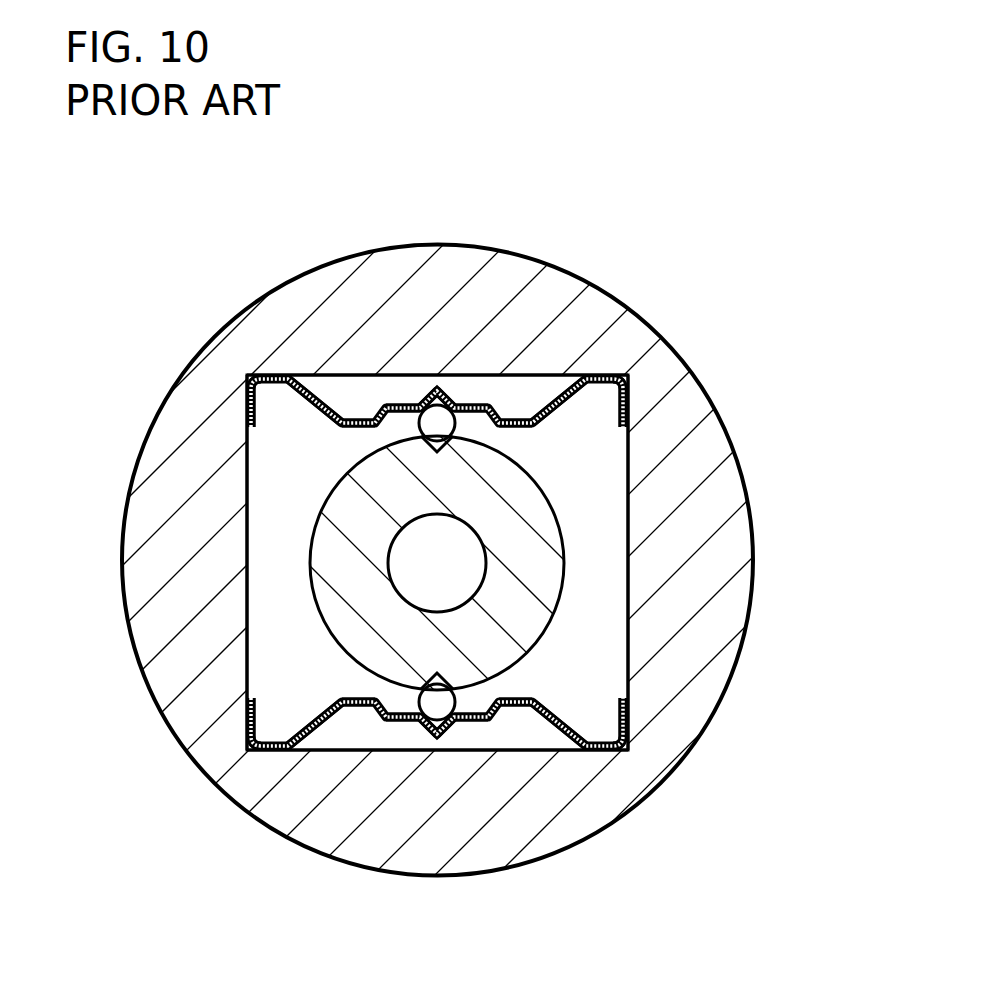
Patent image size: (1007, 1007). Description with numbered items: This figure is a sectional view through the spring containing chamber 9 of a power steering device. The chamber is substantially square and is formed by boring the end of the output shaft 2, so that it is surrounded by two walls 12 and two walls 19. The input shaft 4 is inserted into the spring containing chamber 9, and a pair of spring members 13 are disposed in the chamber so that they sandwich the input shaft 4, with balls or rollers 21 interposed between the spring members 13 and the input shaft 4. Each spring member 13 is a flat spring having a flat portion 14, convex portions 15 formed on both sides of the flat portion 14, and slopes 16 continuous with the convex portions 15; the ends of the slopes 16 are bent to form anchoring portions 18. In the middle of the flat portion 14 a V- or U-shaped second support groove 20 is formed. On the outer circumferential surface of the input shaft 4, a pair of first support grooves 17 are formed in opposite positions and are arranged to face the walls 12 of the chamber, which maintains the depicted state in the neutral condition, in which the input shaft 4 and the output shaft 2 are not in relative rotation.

The output shaft 2 is at (700, 403).
The input shaft 4 is at (318, 556).
The spring containing chamber 9 is at (598, 523).
The wall 12 is at (550, 373).
The spring member 13 is at (300, 182).
The flat portion 14 is at (403, 405).
The convex portion 15 is at (360, 418).
The slope 16 is at (335, 415).
The first support groove 17 is at (455, 438).
The anchoring portion 18 is at (245, 413).
The wall 19 is at (620, 584).
The second support groove 20 is at (452, 402).
The ball or roller 21 is at (425, 422).